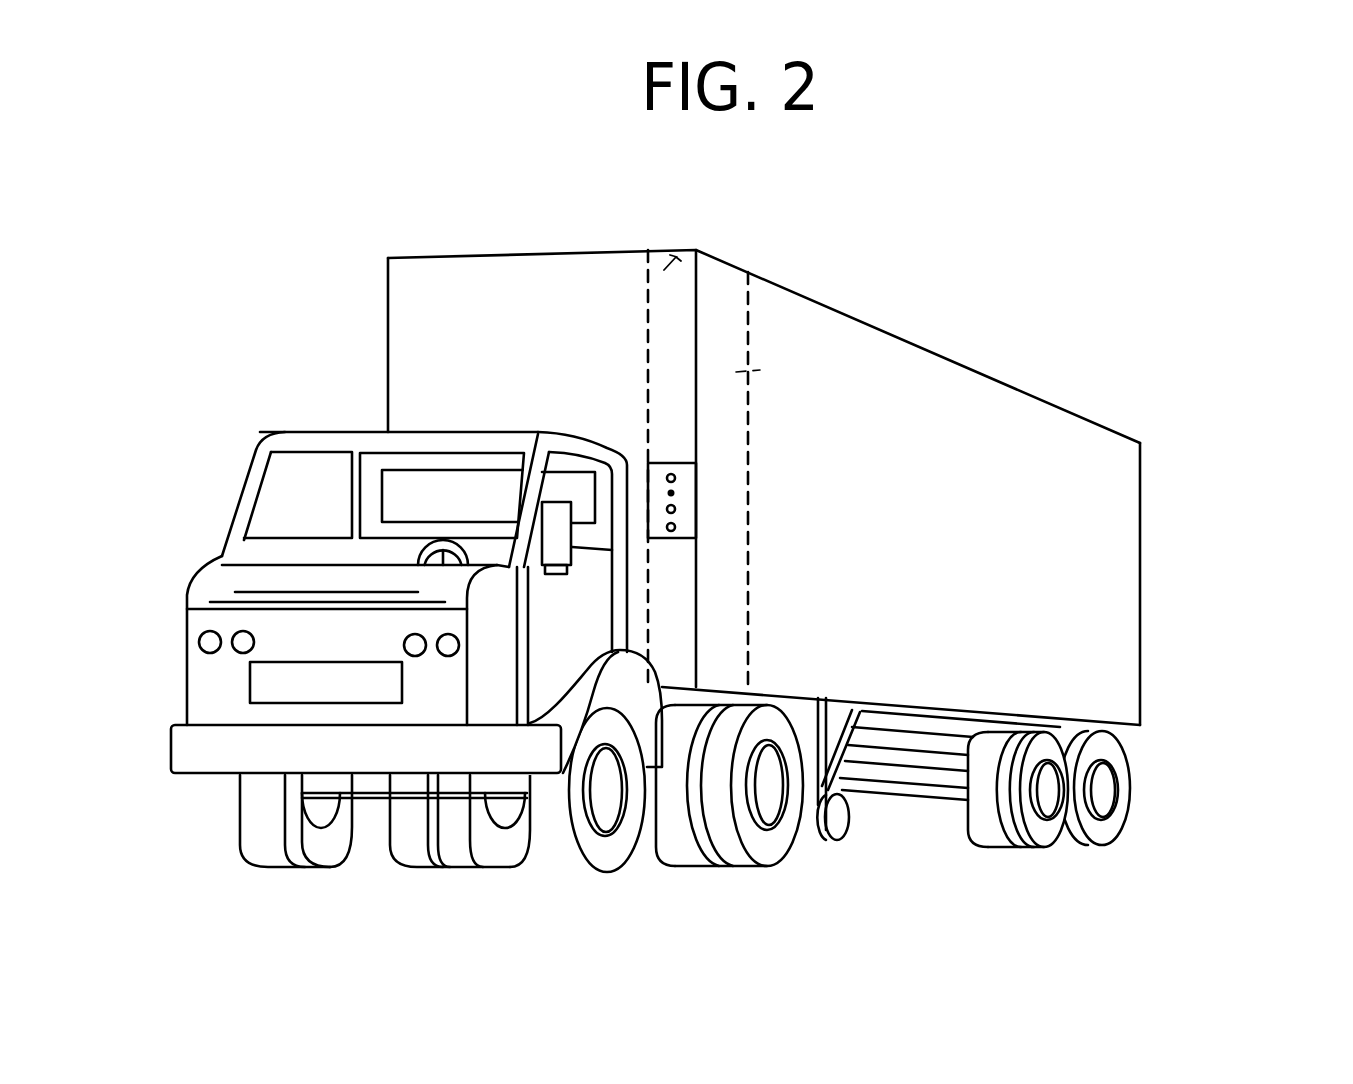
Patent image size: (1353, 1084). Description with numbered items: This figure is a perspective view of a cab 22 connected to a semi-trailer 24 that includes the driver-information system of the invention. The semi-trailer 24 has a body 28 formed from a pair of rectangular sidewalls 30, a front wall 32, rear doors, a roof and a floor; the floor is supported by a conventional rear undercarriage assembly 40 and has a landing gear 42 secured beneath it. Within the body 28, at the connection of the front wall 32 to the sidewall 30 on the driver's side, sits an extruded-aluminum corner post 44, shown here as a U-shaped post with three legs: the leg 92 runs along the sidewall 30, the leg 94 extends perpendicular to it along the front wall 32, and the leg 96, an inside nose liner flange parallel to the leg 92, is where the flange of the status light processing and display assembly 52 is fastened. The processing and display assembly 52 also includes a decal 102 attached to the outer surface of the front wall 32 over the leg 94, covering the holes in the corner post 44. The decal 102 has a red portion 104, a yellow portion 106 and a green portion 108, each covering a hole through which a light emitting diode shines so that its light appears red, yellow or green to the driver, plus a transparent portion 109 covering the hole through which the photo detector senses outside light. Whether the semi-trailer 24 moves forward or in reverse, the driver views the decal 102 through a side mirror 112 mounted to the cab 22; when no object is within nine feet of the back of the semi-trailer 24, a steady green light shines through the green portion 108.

The cab 22 is at (483, 671).
The semi-trailer 24 is at (762, 565).
The body 28 is at (1113, 660).
The sidewall 30 is at (944, 378).
The front wall 32 is at (397, 334).
The rear undercarriage assembly 40 is at (953, 735).
The landing gear 42 is at (840, 822).
The corner post 44 is at (750, 310).
The status light processing and display assembly 52 is at (758, 534).
The leg 92 is at (760, 370).
The leg 94 is at (660, 367).
The leg 96 is at (650, 278).
The decal 102 is at (660, 536).
The red portion 104 is at (675, 478).
The yellow portion 106 is at (676, 509).
The green portion 108 is at (676, 527).
The transparent portion 109 is at (674, 493).
The side mirror 112 is at (566, 558).